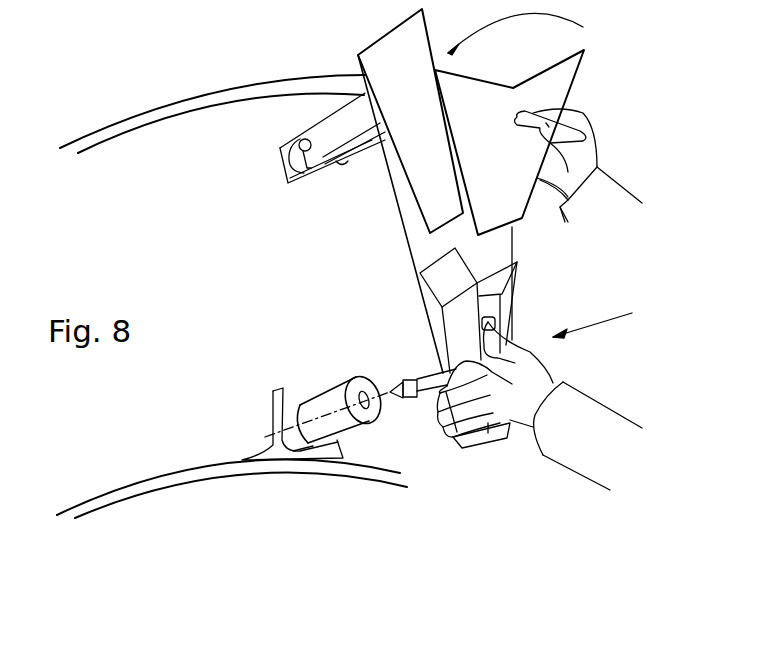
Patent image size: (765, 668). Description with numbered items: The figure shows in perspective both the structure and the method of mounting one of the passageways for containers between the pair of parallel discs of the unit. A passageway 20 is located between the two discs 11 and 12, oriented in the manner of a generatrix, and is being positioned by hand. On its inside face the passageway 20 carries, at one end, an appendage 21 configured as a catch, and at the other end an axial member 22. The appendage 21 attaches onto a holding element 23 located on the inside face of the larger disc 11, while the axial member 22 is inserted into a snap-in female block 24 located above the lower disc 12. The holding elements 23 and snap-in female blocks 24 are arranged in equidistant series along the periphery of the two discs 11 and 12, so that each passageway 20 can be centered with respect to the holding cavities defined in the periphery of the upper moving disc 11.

The upper disc 11 is at (142, 117).
The lower disc 12 is at (223, 470).
The passageway 20 is at (495, 248).
The appendage 21 is at (362, 120).
The axial member 22 is at (427, 335).
The holding element 23 is at (313, 182).
The snap-in female block 24 is at (347, 417).